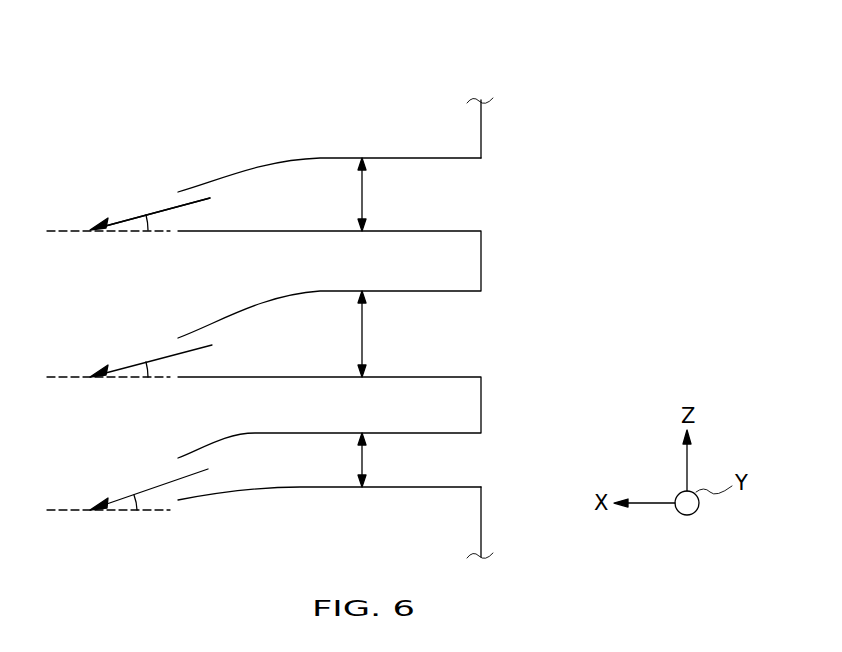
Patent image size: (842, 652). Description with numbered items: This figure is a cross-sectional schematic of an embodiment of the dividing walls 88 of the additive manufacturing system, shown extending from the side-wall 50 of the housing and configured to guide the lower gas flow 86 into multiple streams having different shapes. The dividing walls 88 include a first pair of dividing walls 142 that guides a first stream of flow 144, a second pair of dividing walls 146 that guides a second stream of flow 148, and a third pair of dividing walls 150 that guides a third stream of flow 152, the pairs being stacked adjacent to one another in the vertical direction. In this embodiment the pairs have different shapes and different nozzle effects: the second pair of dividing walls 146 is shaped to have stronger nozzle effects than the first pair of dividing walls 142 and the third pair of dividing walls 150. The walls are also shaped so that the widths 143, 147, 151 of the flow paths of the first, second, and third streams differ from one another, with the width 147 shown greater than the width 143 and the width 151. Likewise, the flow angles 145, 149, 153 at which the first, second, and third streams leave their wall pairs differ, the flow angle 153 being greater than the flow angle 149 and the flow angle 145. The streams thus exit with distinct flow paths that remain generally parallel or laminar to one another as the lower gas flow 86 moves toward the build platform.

The side-wall 50 is at (482, 127).
The lower gas flow 86 is at (163, 165).
The dividing walls 88 is at (332, 142).
The first pair of dividing walls 142 is at (462, 163).
The width 143 is at (365, 195).
The first stream of flow 144 is at (152, 208).
The flow angle 145 is at (150, 233).
The second pair of dividing walls 146 is at (457, 295).
The width 147 is at (365, 330).
The second stream of flow 148 is at (150, 354).
The flow angle 149 is at (150, 379).
The third pair of dividing walls 150 is at (462, 437).
The width 151 is at (365, 460).
The third stream of flow 152 is at (140, 486).
The flow angle 153 is at (138, 512).